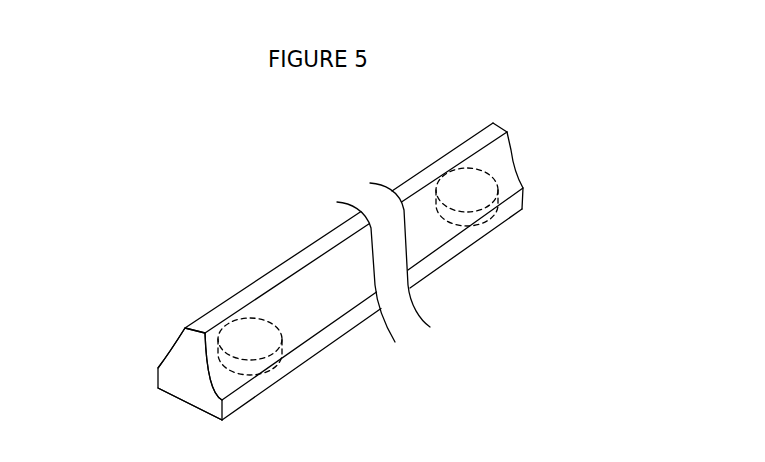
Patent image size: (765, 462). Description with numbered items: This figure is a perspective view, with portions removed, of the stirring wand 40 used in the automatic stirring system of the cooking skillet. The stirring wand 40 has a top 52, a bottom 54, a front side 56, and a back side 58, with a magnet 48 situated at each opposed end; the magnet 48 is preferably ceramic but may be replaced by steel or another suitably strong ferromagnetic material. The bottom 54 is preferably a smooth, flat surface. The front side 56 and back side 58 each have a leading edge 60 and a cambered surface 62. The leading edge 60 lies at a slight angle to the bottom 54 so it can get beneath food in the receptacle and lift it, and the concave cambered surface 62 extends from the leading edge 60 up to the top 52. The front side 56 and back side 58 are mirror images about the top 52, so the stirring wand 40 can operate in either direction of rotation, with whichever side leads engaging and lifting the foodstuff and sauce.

The stirring wand 40 is at (307, 369).
The magnet 48 is at (468, 220).
The top 52 is at (502, 123).
The bottom 54 is at (177, 404).
The front side 56 is at (339, 299).
The back side 58 is at (177, 337).
The leading edge 60 is at (452, 260).
The cambered surface 62 is at (515, 160).